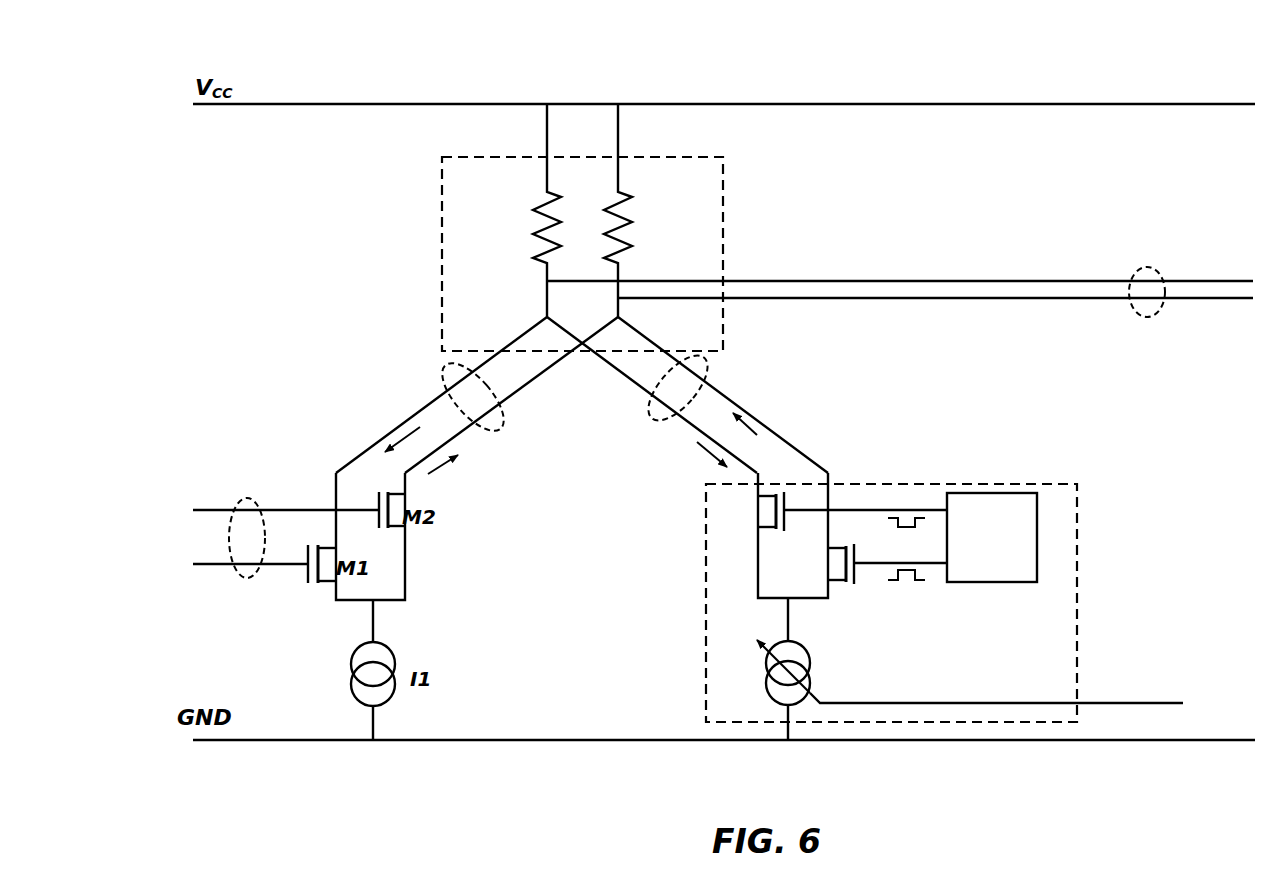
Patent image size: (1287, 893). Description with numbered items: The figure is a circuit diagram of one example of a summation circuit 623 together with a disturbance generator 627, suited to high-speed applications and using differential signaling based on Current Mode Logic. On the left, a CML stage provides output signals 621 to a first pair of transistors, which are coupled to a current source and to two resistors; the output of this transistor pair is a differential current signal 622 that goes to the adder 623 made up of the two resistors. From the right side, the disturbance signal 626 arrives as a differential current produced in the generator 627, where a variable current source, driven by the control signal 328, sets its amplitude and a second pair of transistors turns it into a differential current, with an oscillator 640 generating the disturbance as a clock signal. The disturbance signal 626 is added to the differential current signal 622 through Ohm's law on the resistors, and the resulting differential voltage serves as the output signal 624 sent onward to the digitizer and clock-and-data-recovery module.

The control signal 328 is at (1158, 703).
The output signals 621 is at (245, 498).
The differential current signal 622 is at (502, 420).
The summation circuit 623 is at (442, 223).
The output signal 624 is at (1148, 267).
The disturbance signal 626 is at (645, 408).
The disturbance generator 627 is at (706, 595).
The oscillator 640 is at (1000, 582).